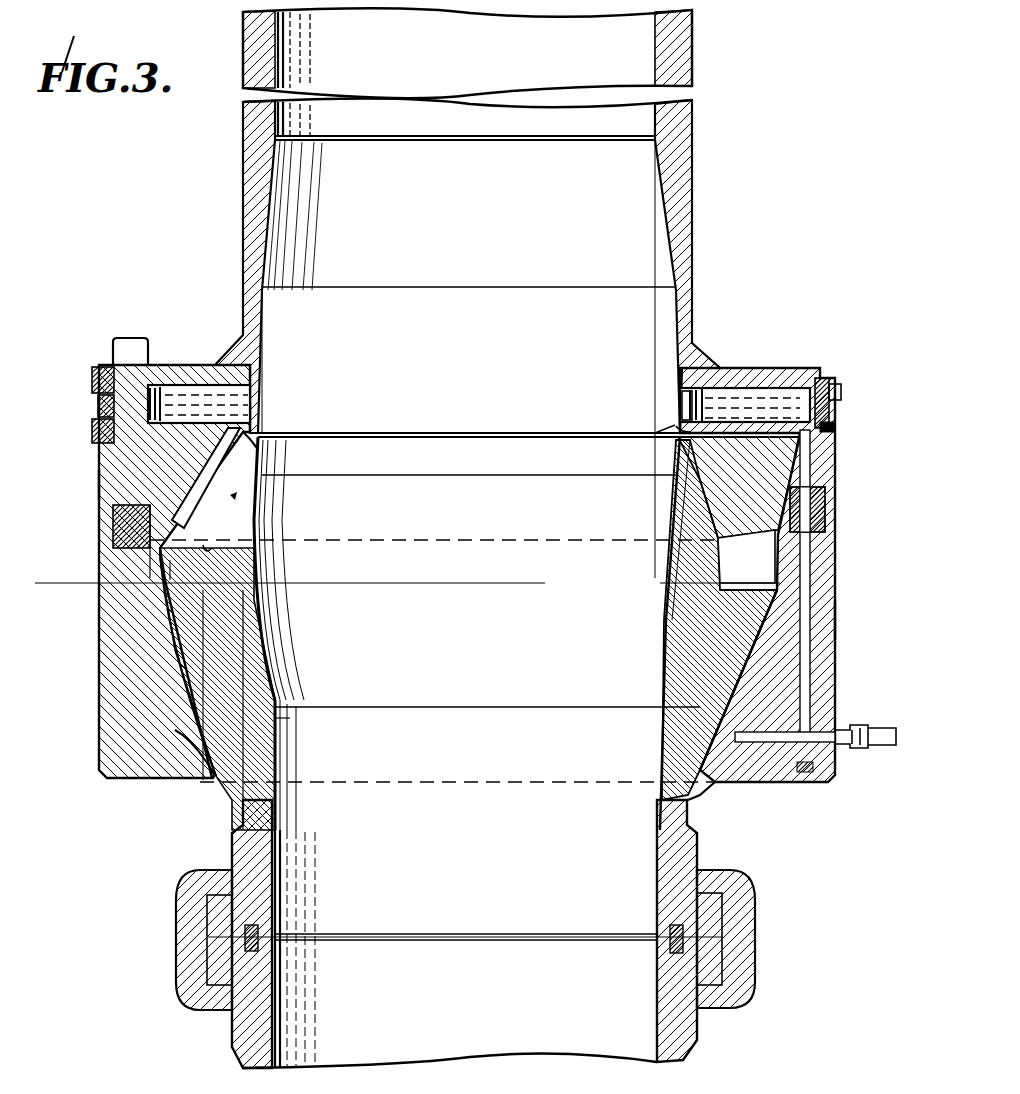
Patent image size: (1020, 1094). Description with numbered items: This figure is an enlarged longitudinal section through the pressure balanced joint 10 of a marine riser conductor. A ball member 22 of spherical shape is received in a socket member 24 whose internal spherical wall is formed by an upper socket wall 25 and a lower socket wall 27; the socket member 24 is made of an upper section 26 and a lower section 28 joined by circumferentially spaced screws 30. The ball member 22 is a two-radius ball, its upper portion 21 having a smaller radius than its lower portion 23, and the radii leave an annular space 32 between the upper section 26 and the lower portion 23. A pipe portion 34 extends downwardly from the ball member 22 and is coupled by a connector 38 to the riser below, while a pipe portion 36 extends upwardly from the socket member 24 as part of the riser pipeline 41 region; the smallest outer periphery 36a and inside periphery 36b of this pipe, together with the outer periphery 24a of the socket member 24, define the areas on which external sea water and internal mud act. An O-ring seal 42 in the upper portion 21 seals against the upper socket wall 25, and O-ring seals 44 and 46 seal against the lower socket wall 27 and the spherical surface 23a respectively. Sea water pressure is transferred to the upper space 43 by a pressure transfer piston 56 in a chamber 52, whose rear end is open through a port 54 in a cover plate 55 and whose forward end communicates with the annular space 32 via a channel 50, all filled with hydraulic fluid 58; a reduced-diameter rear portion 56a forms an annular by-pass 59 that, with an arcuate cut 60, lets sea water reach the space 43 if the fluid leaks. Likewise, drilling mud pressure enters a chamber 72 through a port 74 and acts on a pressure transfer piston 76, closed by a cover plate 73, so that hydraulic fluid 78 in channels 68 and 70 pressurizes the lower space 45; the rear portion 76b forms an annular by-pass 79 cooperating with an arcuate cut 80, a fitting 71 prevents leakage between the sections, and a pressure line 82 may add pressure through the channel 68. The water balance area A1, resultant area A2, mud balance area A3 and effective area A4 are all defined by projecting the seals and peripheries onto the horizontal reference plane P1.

The pressure balanced joint 10 is at (775, 262).
The upper portion of the ball 21 is at (695, 518).
The ball member 22 is at (705, 798).
The lower portion of the ball 23 is at (685, 670).
The spherical surface of the ball 23a is at (275, 718).
The socket member 24 is at (790, 366).
The outer periphery of the socket member 24a is at (99, 480).
The upper socket wall 25 is at (680, 443).
The upper section of the socket member 26 is at (822, 466).
The lower socket wall 27 is at (215, 765).
The lower section of the socket member 28 is at (822, 618).
The screws 30 is at (135, 338).
The annular space 32 is at (170, 546).
The pipe portion 34 is at (665, 862).
The pipe portion 36 is at (680, 158).
The smallest outer periphery of the riser pipe 36a is at (243, 245).
The inside periphery of the riser pipe 36b is at (655, 134).
The connector 38 is at (745, 940).
The pipe 41 is at (680, 40).
The O-ring seal 42 is at (236, 495).
The upper space 43 is at (205, 548).
The O-ring seal 44 is at (165, 665).
The lower space 45 is at (758, 695).
The O-ring seal 46 is at (200, 753).
The channel 50 is at (255, 445).
The chamber 52 is at (188, 395).
The port 54 is at (108, 400).
The cover plate 55 is at (100, 370).
The pressure transfer piston 56 is at (156, 388).
The rear portion of the pressure transfer piston 56a is at (130, 365).
The hydraulic fluid 58 is at (215, 395).
The annular by-pass 59 is at (105, 432).
The arcuate cut 60 is at (230, 418).
The channel 68 is at (752, 745).
The channel 70 is at (808, 562).
The fitting 71 is at (826, 503).
The chamber 72 is at (752, 388).
The cover plate 73 is at (841, 396).
The port 74 is at (680, 400).
The pressure transfer piston 76 is at (708, 390).
The rear portion of the pressure transfer piston 76b is at (682, 392).
The hydraulic fluid 78 is at (820, 380).
The annular by-pass 79 is at (676, 428).
The arcuate cut 80 is at (835, 424).
The pressure line 82 is at (880, 745).
The water balance area A1 is at (178, 570).
The resultant area A2 is at (210, 608).
The mud balance area A3 is at (755, 608).
The effective area A4 is at (700, 563).
The horizontal reference plane P1 is at (398, 593).